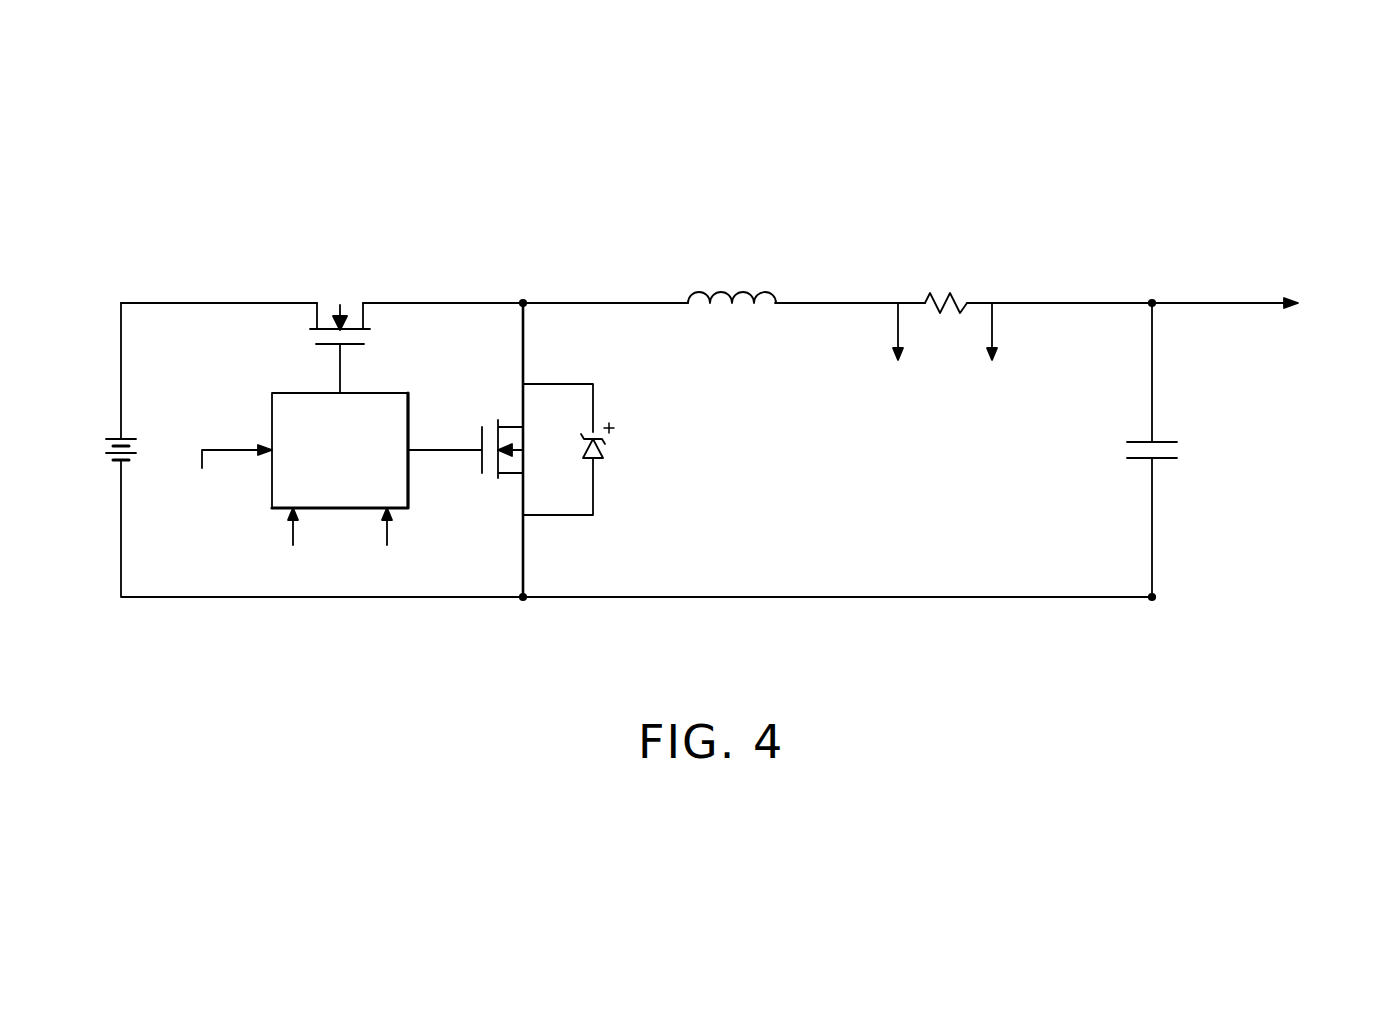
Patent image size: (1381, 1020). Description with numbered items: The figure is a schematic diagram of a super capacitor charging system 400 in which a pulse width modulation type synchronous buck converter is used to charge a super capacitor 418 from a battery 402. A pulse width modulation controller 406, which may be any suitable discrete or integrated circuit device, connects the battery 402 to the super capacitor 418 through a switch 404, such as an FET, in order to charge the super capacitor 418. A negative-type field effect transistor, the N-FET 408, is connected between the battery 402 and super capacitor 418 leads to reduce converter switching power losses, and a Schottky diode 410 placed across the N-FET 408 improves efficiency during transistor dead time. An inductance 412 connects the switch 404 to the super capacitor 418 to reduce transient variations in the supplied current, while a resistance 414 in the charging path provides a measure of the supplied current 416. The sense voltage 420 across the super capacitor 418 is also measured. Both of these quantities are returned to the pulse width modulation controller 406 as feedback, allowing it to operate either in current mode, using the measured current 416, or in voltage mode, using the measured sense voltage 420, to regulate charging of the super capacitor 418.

The super capacitor charging system 400 is at (335, 122).
The battery 402 is at (106, 449).
The switch 404 is at (345, 298).
The pulse width modulation controller 406 is at (398, 391).
The negative-type field effect transistor (N-FET) 408 is at (490, 478).
The Schottky diode 410 is at (603, 448).
The inductance 412 is at (718, 292).
The resistance 414 is at (942, 295).
The supplied current 416 is at (346, 560).
The super capacitor 418 is at (1127, 450).
The sense voltage 420 is at (203, 501).